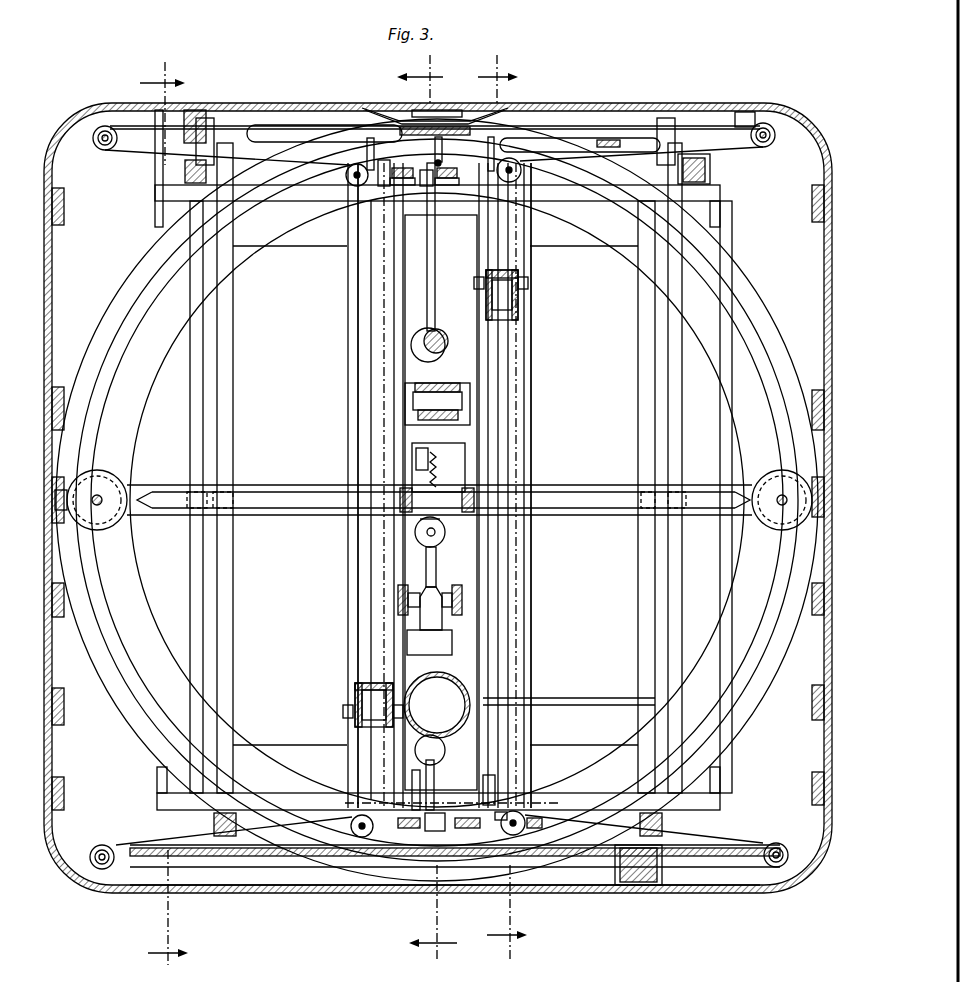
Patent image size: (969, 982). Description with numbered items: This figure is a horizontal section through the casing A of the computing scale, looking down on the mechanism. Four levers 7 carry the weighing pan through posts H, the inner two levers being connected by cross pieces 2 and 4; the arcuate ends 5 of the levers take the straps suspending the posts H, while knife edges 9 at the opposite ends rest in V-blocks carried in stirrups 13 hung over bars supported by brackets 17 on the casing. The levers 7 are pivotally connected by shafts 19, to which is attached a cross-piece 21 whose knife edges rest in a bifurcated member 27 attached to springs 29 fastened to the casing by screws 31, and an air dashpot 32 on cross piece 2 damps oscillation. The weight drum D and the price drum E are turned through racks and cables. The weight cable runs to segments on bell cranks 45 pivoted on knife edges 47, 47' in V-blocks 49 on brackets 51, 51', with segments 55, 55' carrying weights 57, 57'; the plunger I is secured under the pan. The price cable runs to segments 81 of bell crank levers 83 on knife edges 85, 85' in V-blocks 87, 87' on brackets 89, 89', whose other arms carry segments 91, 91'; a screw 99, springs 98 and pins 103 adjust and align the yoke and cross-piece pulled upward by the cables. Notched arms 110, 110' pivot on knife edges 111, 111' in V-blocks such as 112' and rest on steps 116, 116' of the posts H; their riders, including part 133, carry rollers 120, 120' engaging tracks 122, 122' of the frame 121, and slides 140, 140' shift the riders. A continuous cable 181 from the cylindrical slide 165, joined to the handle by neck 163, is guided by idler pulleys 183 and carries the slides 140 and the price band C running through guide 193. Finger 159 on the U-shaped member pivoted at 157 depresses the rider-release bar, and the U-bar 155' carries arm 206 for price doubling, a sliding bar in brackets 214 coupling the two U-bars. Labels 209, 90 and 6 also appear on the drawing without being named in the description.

The casing A is at (114, 112).
The weight drum D is at (126, 290).
The price drum E is at (142, 343).
The levers 7 is at (190, 312).
The bell cranks 45 is at (160, 196).
The brackets 17 is at (190, 124).
The idler pulleys 183 is at (105, 150).
The continuous cable 181 is at (126, 154).
The posts H is at (184, 170).
The stirrups 13 is at (205, 125).
The brackets 214 is at (270, 124).
The arm 206 is at (398, 118).
The band C is at (440, 118).
The step 116' is at (516, 126).
The U-bar 155' is at (580, 114).
The pad 209 is at (612, 138).
The finger 159 is at (366, 150).
The guide 193 is at (443, 146).
The bracket 51 is at (382, 195).
The knife edge 111 is at (403, 195).
The knife edge 47 is at (439, 198).
The slide 140 is at (534, 297).
The rider part 133 is at (512, 318).
The rollers 120 is at (515, 278).
The cross piece 4 is at (596, 248).
The arcuate ends 5 is at (427, 513).
The section line 6- 6 is at (502, 510).
The segment 55 is at (441, 247).
The plunger I is at (443, 332).
The weight 57 is at (424, 335).
The knife edge 85 is at (438, 391).
The bracket 89 is at (430, 374).
The V-block 87 is at (437, 383).
The segment 81 is at (405, 452).
The track 122' is at (333, 500).
The notched arm 110' is at (329, 485).
The notched arm 110 is at (545, 485).
The frame 121 is at (532, 400).
The track 122 is at (535, 485).
The bell crank lever 83 is at (466, 457).
The pins 103 is at (448, 469).
The bifurcated member 27 is at (255, 486).
The cross-piece 21 is at (590, 492).
The shafts 19 is at (665, 492).
The springs 29 is at (120, 482).
The screws 31 is at (99, 496).
The segment 91 is at (439, 513).
The screw 99 is at (438, 520).
The springs 98 is at (428, 552).
The segment 91' is at (377, 551).
The pin 90 is at (427, 536).
The knife edge 85' is at (484, 596).
The bracket 89' is at (489, 607).
The V-block 87' is at (383, 633).
The air dashpot 32 is at (455, 680).
The rollers 120' is at (373, 715).
The bracket 140' is at (346, 695).
The cross piece 2 is at (586, 698).
The weight 57' is at (445, 750).
The segment 55' is at (447, 785).
The knife edge 47' is at (409, 785).
The knife edge 111' is at (525, 782).
The knife edges 9 is at (452, 801).
The bracket 51' is at (478, 846).
The V-block 49 is at (432, 832).
The V-block 112' is at (483, 828).
The step 116 is at (455, 867).
The pivot 157 is at (322, 886).
The neck 163 is at (638, 883).
The cylindrical slide 165 is at (660, 880).